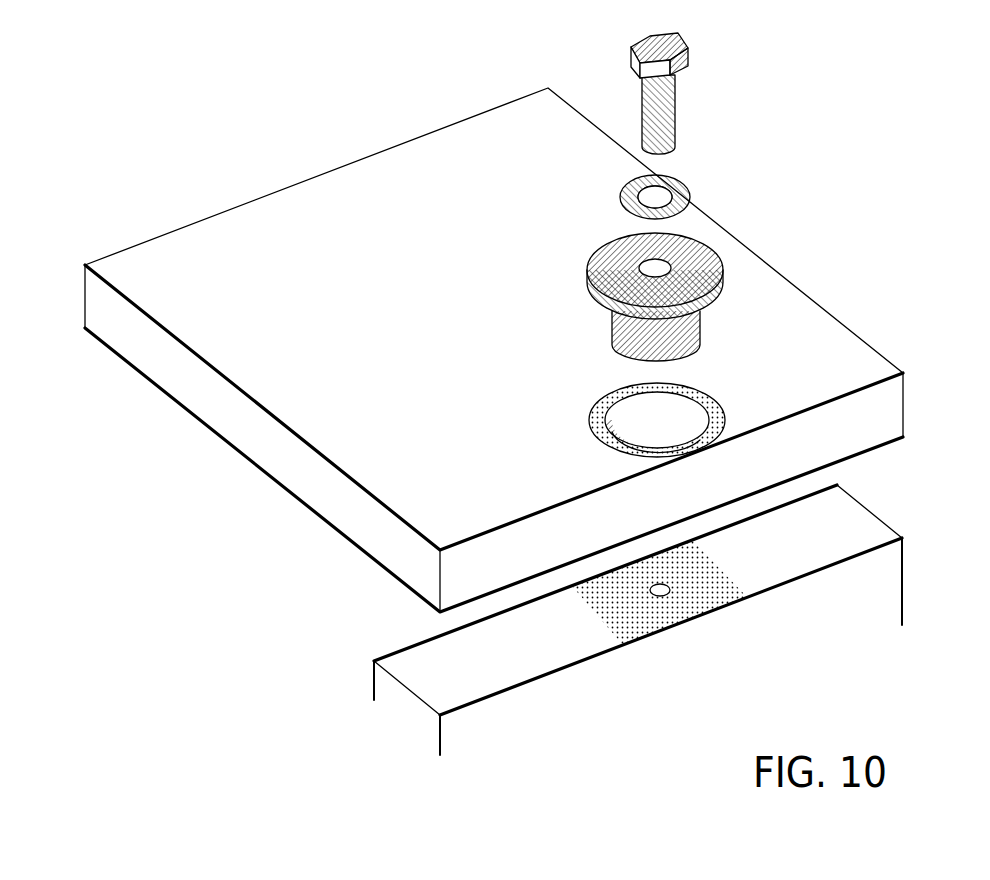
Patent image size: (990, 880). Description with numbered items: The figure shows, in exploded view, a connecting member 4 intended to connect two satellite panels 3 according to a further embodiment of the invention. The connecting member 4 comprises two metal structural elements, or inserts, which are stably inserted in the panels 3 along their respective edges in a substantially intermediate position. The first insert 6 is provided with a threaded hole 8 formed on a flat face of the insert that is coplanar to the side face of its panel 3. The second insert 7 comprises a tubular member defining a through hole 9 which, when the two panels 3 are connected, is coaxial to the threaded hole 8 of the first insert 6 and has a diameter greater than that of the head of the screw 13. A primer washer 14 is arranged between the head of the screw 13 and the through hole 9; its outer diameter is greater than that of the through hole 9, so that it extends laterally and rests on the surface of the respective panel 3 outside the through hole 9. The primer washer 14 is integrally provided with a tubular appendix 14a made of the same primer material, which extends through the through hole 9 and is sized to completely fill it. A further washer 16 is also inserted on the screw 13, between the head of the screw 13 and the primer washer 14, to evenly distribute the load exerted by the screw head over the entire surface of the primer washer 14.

The panel 3 is at (820, 342).
The connecting member 4 is at (546, 385).
The first insert 6 is at (712, 572).
The second insert 7 is at (644, 400).
The threaded hole 8 is at (650, 588).
The through hole 9 is at (678, 416).
The screw 13 is at (677, 105).
The primer washer 14 is at (604, 297).
The tubular appendix 14a is at (615, 341).
The further washer 16 is at (687, 184).